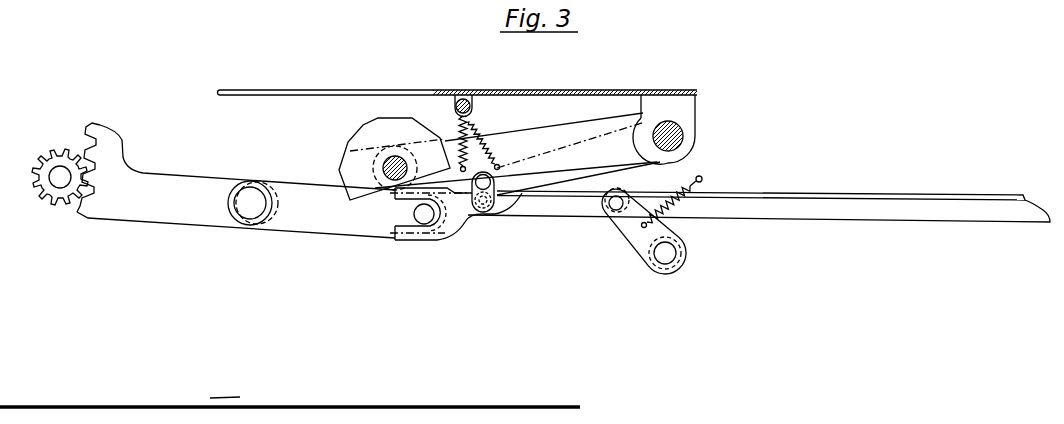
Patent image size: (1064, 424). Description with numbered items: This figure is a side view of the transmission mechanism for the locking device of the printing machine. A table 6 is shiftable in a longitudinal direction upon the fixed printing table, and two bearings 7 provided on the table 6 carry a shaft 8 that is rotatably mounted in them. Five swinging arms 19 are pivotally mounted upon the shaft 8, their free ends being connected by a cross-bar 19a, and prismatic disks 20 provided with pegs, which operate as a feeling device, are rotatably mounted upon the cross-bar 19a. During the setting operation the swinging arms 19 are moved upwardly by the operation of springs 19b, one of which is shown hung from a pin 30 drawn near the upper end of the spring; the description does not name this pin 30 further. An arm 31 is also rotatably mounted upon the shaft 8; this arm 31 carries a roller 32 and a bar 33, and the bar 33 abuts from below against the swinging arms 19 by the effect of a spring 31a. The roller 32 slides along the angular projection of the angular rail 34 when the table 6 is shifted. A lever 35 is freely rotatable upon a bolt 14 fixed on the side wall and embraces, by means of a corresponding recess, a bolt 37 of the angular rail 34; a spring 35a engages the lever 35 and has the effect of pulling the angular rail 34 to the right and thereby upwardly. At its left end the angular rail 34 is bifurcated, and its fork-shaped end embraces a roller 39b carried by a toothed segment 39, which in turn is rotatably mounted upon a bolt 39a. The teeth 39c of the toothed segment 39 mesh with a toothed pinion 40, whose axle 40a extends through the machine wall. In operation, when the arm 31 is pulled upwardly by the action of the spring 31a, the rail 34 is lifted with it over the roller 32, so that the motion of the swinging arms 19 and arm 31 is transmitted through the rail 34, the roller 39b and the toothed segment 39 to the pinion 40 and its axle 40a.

The table 6 is at (541, 90).
The bearings 7 is at (650, 107).
The shaft 8 is at (672, 125).
The bolt 14 is at (670, 257).
The swinging arms 19 is at (570, 133).
The cross-bar 19a is at (388, 157).
The springs 19b is at (461, 140).
The disks 20 is at (354, 148).
The pin 30 is at (463, 104).
The arm 31 is at (576, 172).
The spring 31a is at (478, 130).
The roller 32 is at (490, 208).
The bar 33 is at (482, 190).
The angular rail 34 is at (860, 212).
The lever 35 is at (630, 238).
The spring 35a is at (693, 195).
The bolt 37 is at (613, 211).
The toothed segment 39 is at (183, 217).
The bolt 39a is at (250, 213).
The roller 39b is at (423, 222).
The teeth 39c is at (112, 140).
The toothed pinion 40 is at (63, 200).
The axle 40a is at (53, 180).